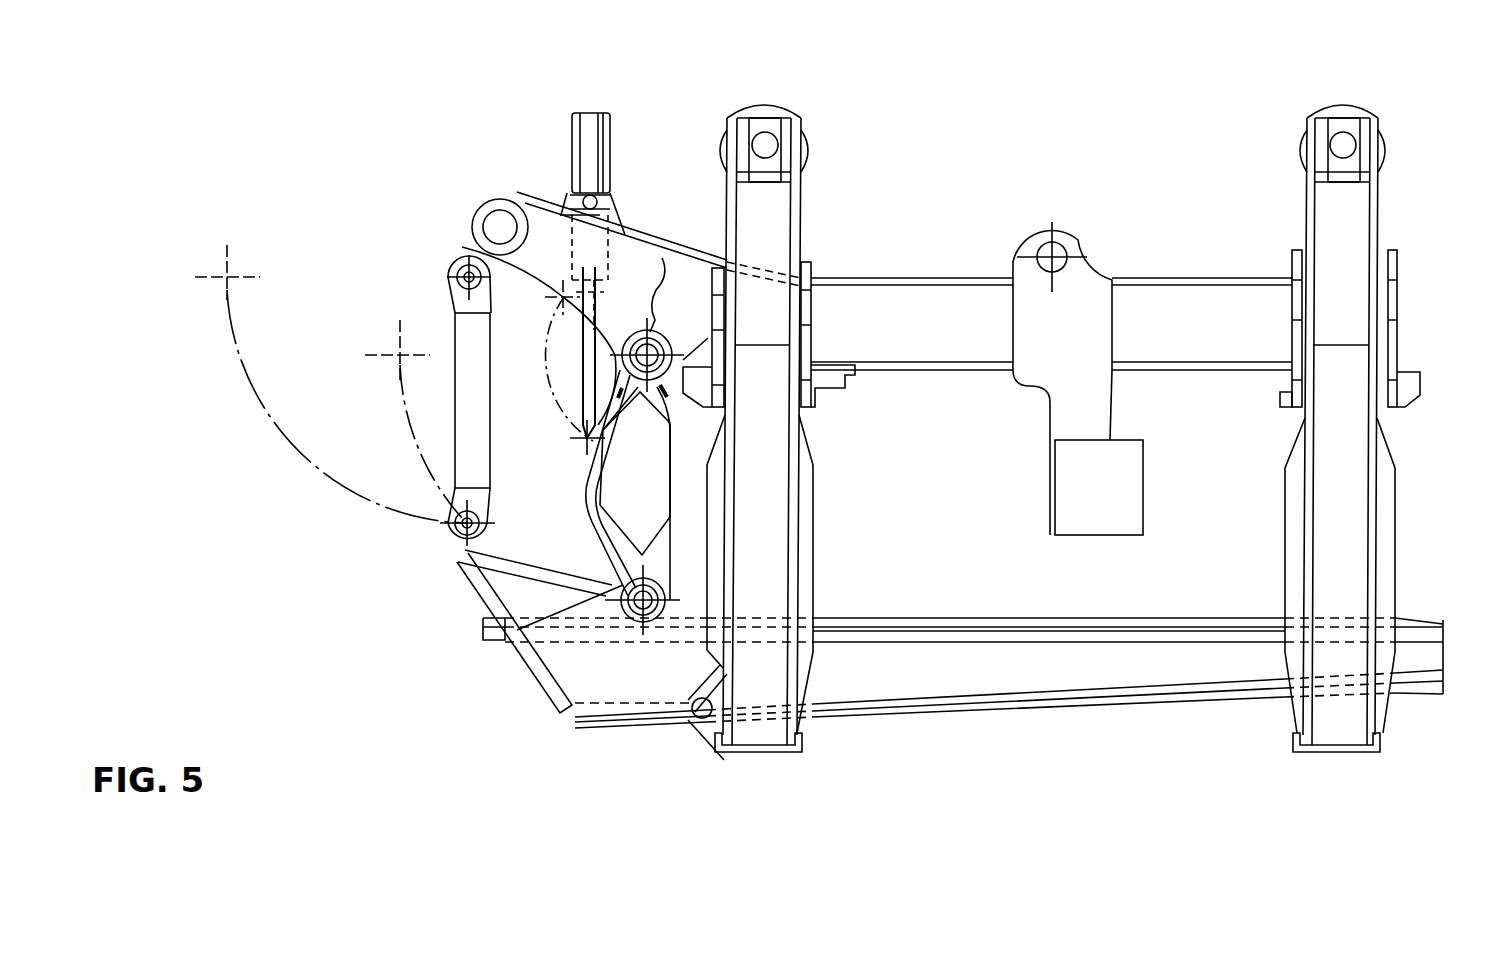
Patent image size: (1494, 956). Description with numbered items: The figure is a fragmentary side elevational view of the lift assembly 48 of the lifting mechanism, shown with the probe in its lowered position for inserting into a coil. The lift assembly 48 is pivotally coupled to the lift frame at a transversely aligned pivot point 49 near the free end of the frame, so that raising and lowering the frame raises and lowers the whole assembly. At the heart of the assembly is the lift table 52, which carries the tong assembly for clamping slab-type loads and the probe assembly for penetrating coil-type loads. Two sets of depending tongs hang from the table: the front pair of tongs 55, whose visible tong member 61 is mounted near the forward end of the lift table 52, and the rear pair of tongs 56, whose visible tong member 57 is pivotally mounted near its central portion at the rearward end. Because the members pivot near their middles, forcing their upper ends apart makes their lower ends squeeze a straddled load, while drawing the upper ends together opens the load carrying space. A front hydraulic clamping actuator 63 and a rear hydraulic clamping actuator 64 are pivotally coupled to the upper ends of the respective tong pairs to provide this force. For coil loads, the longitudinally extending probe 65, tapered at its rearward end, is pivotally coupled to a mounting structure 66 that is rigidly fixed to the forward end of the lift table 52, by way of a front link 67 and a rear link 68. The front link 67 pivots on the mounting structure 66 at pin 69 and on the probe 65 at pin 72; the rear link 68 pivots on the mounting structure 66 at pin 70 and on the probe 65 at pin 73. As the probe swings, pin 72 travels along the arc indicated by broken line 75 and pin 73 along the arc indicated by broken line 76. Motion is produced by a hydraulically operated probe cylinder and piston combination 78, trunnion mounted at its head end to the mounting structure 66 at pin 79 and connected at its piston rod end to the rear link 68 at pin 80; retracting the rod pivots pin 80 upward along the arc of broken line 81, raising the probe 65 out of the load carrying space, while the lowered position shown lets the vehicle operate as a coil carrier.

The lift assembly 48 is at (1037, 105).
The pivot point 49 is at (1052, 257).
The lift table 52 is at (938, 278).
The front pair of tongs 55 is at (775, 560).
The rear pair of tongs 56 is at (1350, 215).
The tong member 57 is at (1345, 540).
The tong member 61 is at (765, 210).
The front hydraulic clamping actuator 63 is at (772, 110).
The rear hydraulic clamping actuator 64 is at (1350, 115).
The probe 65 is at (1000, 655).
The mounting structure 66 is at (620, 262).
The front link 67 is at (470, 385).
The rear link 68 is at (655, 492).
The pin 69 is at (460, 265).
The pin 70 is at (660, 337).
The pin 72 is at (455, 540).
The pin 73 is at (640, 606).
The broken line 75 is at (232, 345).
The broken line 76 is at (400, 420).
The probe cylinder and piston combination 78 is at (603, 135).
The pin 79 is at (588, 200).
The pin 80 is at (583, 450).
The broken line 81 is at (548, 411).